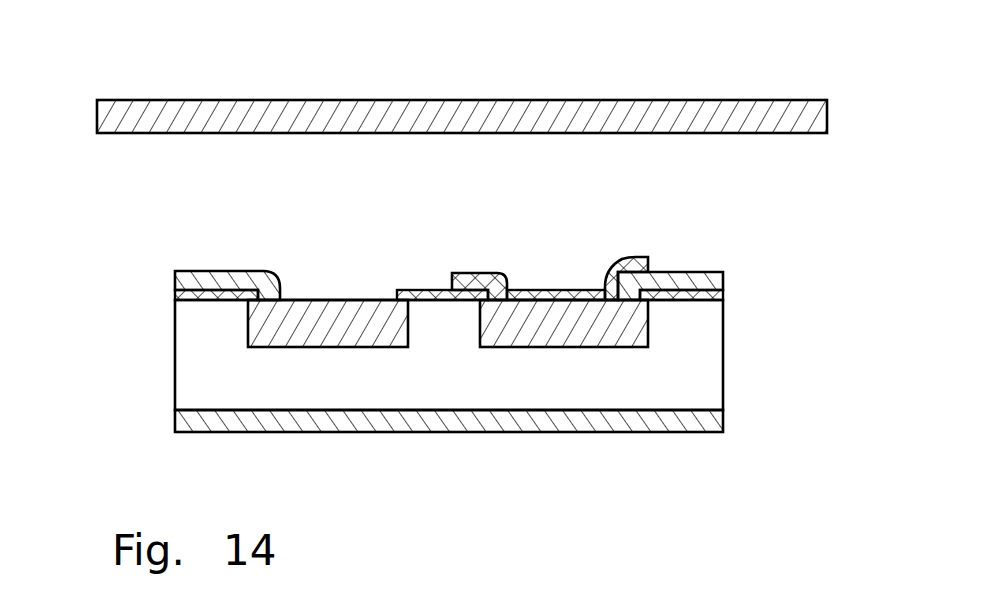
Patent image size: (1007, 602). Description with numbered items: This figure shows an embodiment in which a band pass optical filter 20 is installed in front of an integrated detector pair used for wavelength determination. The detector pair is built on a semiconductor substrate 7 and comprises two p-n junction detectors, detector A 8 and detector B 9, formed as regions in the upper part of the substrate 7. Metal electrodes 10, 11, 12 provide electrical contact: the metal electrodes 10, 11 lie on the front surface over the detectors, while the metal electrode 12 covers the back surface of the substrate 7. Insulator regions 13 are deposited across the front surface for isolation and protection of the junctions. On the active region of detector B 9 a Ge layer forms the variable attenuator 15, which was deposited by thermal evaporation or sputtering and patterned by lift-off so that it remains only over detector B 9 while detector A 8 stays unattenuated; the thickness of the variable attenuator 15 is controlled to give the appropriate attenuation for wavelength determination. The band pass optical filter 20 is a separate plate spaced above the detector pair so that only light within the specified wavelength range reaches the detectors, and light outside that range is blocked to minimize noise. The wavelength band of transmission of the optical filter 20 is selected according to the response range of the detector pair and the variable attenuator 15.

The semiconductor substrate 7 is at (175, 379).
The detector A 8 is at (278, 321).
The detector B 9 is at (623, 327).
The metal electrode 10 is at (175, 280).
The metal electrode 11 is at (724, 275).
The metal electrode 12 is at (173, 417).
The insulator regions 13 is at (724, 295).
The variable attenuator layer 15 is at (650, 258).
The band pass optical filter 20 is at (743, 100).